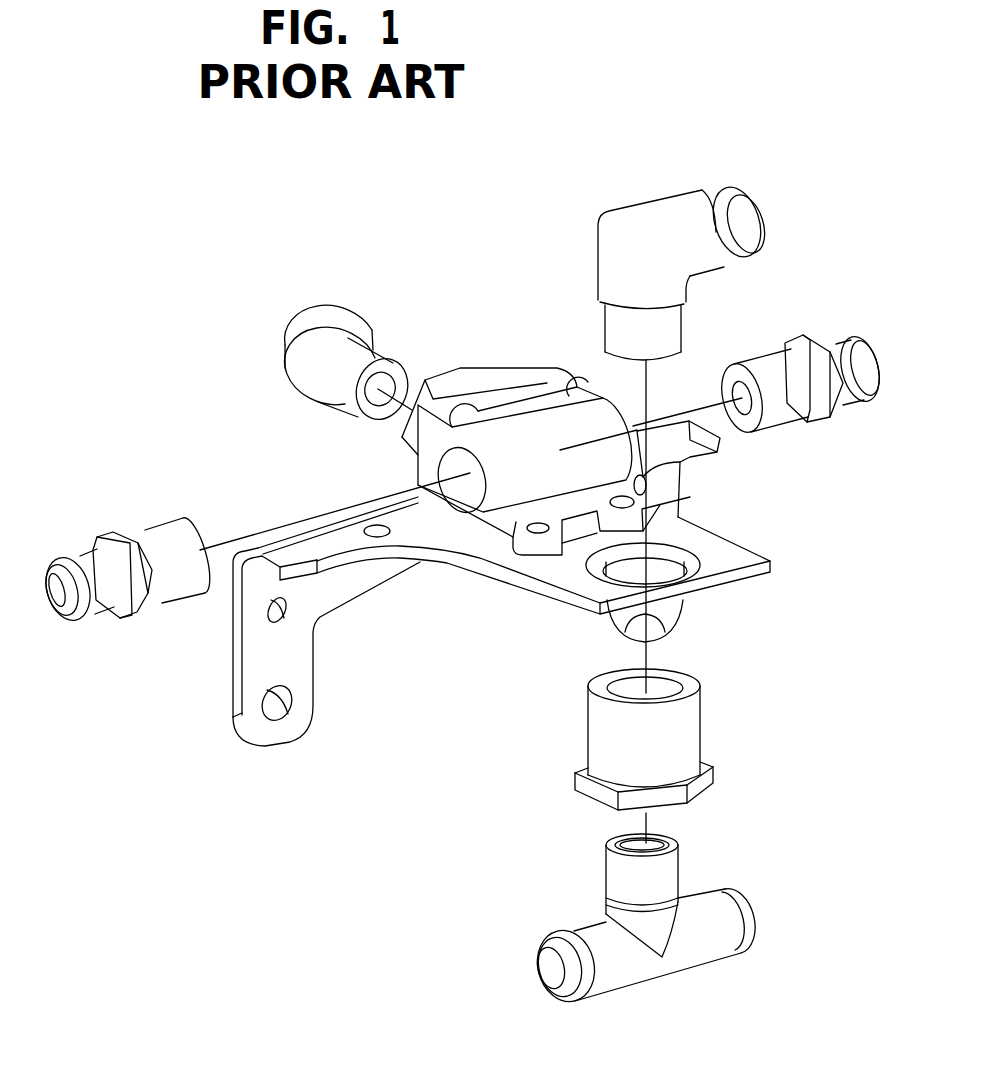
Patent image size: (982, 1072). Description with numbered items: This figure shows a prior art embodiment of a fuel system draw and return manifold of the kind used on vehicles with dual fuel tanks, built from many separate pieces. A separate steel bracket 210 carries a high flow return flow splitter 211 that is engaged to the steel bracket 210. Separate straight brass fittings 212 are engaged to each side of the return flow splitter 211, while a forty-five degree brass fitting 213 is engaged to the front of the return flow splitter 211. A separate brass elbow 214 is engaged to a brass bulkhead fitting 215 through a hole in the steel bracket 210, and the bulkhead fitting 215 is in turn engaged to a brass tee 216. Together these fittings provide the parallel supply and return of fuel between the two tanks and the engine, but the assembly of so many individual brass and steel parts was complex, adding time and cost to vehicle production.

The steel bracket 210 is at (774, 560).
The high flow return flow splitter 211 is at (483, 364).
The straight brass fitting 212 is at (114, 530).
The 45 degree brass fitting 213 is at (281, 366).
The brass elbow 214 is at (745, 255).
The brass bulkhead fitting 215 is at (702, 732).
The brass tee 216 is at (709, 967).